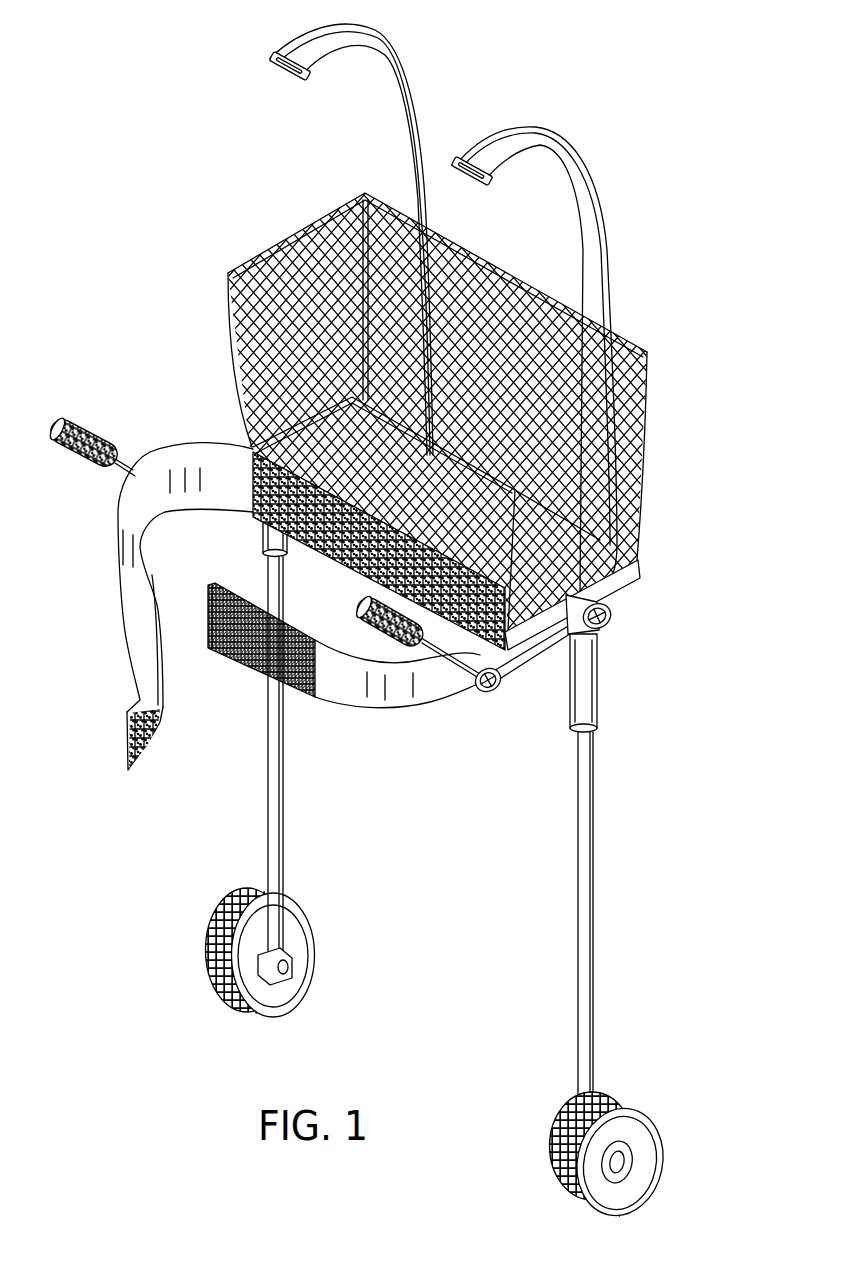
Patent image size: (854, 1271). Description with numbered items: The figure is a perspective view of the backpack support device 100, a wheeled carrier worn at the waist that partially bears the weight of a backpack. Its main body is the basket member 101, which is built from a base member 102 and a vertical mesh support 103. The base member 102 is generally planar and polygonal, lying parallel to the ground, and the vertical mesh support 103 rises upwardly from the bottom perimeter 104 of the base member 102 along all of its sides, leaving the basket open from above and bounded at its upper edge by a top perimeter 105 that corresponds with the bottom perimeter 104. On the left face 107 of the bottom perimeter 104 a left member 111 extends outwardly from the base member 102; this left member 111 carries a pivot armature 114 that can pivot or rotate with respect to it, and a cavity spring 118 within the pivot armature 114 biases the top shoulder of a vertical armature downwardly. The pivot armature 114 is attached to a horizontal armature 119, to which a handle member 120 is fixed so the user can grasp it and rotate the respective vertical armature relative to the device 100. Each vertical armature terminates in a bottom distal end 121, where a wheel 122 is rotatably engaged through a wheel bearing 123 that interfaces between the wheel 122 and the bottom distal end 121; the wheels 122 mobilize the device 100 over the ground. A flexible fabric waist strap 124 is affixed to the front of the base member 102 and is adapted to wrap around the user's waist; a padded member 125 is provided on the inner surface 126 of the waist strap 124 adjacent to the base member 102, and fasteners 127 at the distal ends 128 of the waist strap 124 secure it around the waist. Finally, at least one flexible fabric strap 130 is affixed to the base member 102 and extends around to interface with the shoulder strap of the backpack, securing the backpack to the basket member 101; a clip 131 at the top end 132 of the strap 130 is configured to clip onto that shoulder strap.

The backpack support device 100 is at (425, 623).
The basket member 101 is at (357, 180).
The base member 102 is at (658, 636).
The vertical mesh support 103 is at (647, 470).
The bottom perimeter 104 is at (632, 562).
The top perimeter 105 is at (647, 351).
The left face 107 is at (686, 623).
The left member 111 is at (647, 642).
The pivot armature 114 is at (600, 678).
The cavity spring 118 is at (575, 797).
The horizontal armature 119 is at (537, 646).
The handle member 120 is at (390, 633).
The bottom distal end 121 is at (290, 940).
The wheel 122 is at (650, 1107).
The wheel bearing 123 is at (260, 980).
The waist strap 124 is at (173, 447).
The padded member 125 is at (293, 508).
The inner surface 126 is at (230, 473).
The fasteners 127 is at (160, 712).
The distal ends 128 is at (117, 742).
The strap 130 is at (600, 225).
The clip 131 is at (467, 180).
The top end 132 is at (466, 160).